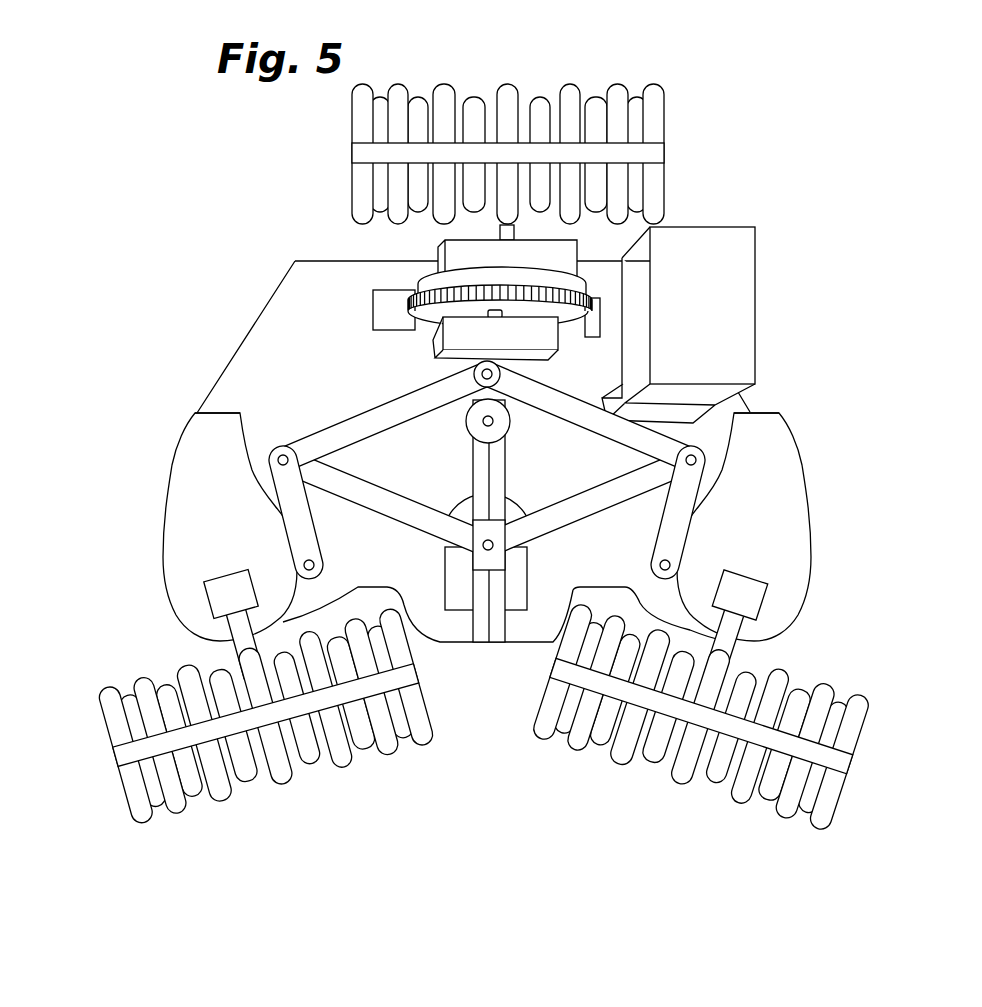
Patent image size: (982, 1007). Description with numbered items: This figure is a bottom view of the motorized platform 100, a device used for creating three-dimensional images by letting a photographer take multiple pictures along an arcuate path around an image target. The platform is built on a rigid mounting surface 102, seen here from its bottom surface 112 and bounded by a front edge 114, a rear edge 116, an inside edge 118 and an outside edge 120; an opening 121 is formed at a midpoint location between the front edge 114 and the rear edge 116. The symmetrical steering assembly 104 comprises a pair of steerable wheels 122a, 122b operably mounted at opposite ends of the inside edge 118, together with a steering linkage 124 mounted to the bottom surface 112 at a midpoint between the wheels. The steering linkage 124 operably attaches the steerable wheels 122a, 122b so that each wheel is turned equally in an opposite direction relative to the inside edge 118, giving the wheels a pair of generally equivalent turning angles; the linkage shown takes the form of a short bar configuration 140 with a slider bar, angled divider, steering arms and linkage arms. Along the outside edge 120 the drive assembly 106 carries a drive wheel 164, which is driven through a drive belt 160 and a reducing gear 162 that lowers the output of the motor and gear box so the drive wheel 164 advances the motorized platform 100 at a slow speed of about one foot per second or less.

The motorized platform 100 is at (858, 233).
The mounting surface 102 is at (282, 310).
The symmetrical steering assembly 104 is at (363, 494).
The drive assembly 106 is at (577, 280).
The bottom surface 112 is at (245, 403).
The front edge 114 is at (178, 489).
The rear edge 116 is at (780, 510).
The inside edge 118 is at (580, 583).
The outside edge 120 is at (301, 258).
The opening 121 is at (518, 590).
The steerable wheel 122a is at (168, 690).
The steerable wheel 122b is at (820, 672).
The steering linkage 124 is at (608, 497).
The short bar configuration 140 is at (600, 513).
The drive belt 160 is at (538, 278).
The reducing gear 162 is at (372, 303).
The drive wheel 164 is at (352, 151).